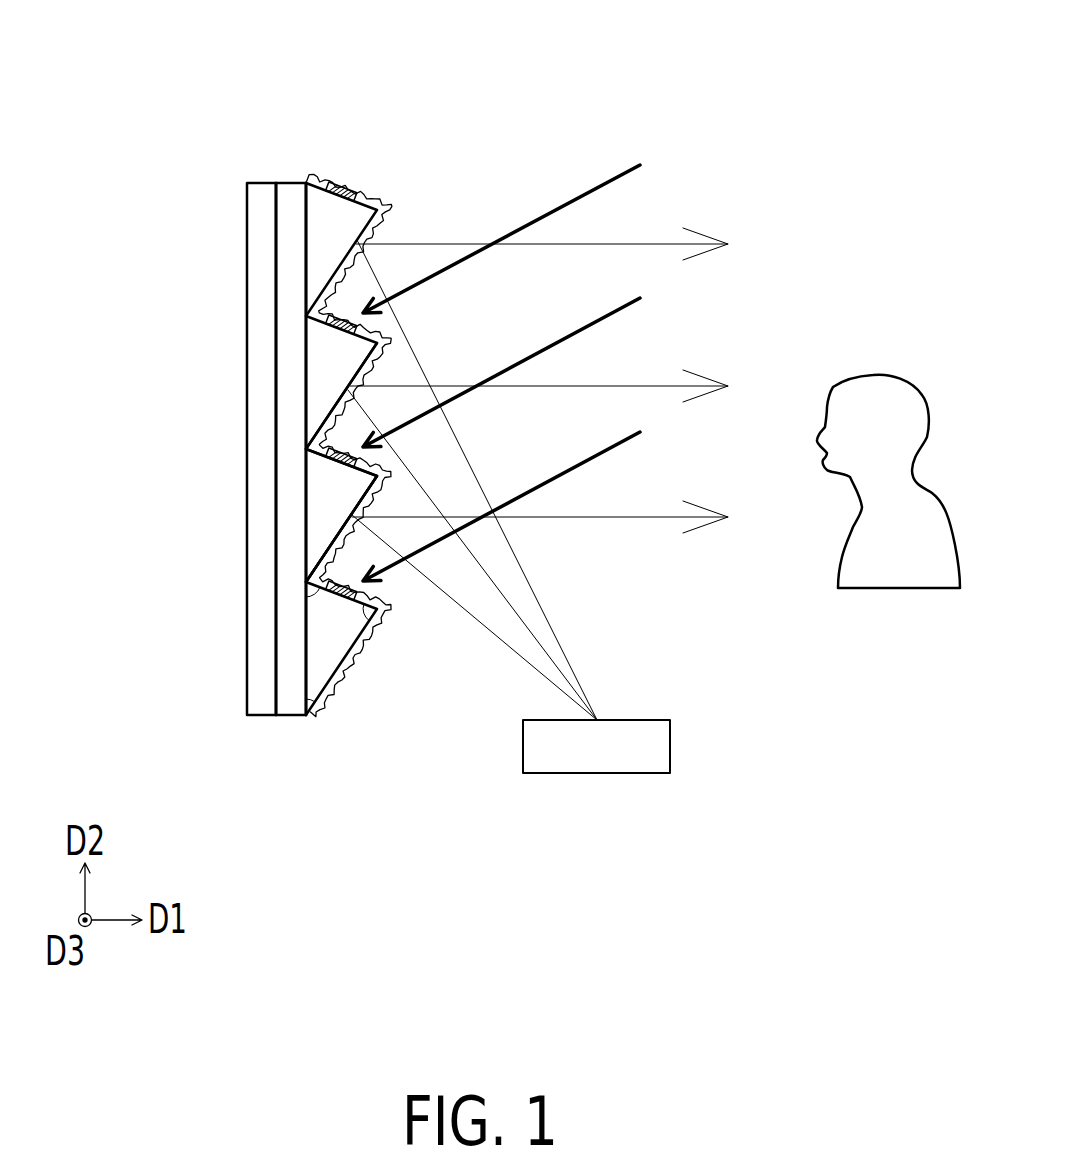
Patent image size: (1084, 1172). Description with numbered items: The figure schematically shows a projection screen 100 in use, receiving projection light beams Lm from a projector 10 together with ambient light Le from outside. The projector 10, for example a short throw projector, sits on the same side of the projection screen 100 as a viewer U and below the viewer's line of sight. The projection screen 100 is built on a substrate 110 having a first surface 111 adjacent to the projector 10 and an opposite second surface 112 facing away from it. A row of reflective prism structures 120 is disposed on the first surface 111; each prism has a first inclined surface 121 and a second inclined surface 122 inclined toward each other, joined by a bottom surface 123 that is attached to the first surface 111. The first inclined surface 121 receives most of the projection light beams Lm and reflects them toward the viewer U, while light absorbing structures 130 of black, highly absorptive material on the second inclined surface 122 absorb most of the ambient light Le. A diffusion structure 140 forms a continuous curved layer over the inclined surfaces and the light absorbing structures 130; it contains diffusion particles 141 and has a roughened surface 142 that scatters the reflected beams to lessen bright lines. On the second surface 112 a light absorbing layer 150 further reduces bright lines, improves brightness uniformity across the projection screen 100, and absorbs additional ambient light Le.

The projection screen 100 is at (267, 153).
The substrate 110 is at (287, 707).
The first surface 111 is at (305, 237).
The second surface 112 is at (291, 278).
The prism structures 120 is at (128, 430).
The first inclined surface 121 is at (313, 560).
The second inclined surface 122 is at (307, 428).
The bottom surface 123 is at (320, 493).
The light absorbing structures 130 is at (305, 317).
The diffusion structure 140 is at (425, 85).
The diffusion particles 141 is at (316, 180).
The surface of the diffusion structure 142 is at (379, 196).
The light absorbing layer 150 is at (263, 707).
The projector 10 is at (600, 757).
The ambient light Le is at (587, 188).
The projection light beams Lm is at (577, 674).
The viewer U is at (902, 565).